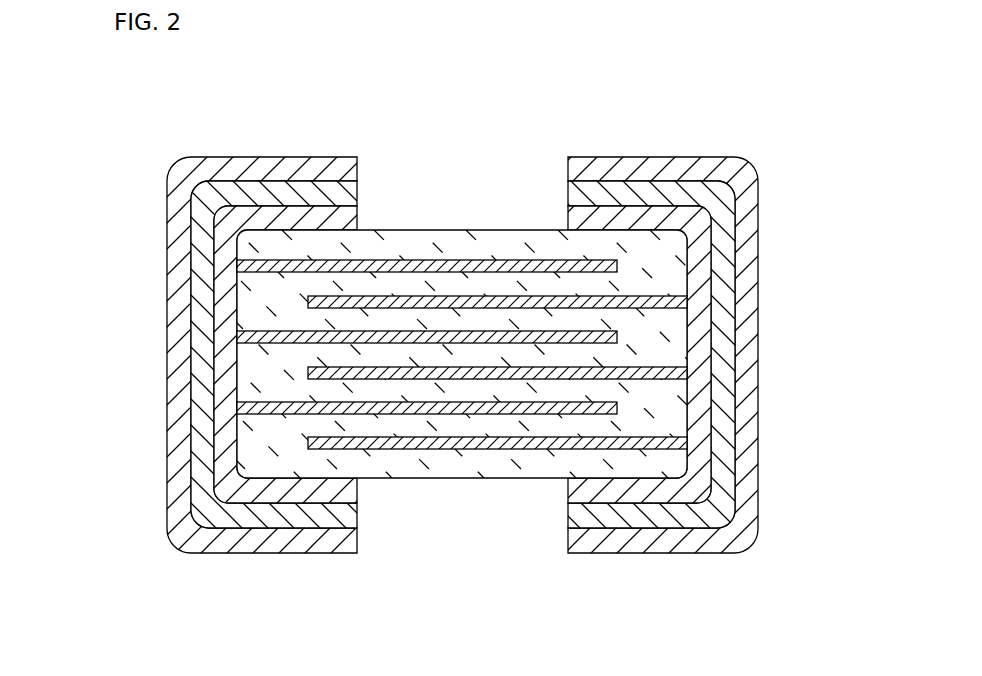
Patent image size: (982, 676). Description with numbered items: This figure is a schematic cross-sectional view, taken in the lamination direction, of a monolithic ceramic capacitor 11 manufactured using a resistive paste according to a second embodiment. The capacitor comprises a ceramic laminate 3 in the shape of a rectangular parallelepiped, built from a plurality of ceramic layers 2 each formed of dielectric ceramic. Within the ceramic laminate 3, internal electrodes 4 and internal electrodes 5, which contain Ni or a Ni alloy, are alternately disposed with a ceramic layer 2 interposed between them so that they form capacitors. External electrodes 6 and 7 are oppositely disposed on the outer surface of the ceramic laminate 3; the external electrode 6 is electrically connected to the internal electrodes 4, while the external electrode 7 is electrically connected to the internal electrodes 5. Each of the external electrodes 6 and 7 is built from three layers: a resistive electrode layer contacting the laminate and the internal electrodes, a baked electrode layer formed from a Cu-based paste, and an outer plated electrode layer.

The monolithic ceramic capacitor 11 is at (186, 78).
The ceramic layers 2 is at (460, 397).
The ceramic laminate 3 is at (452, 354).
The internal electrodes 4 is at (443, 333).
The internal electrodes 5 is at (538, 382).
The external electrode 6 is at (80, 277).
The external electrode 7 is at (847, 285).